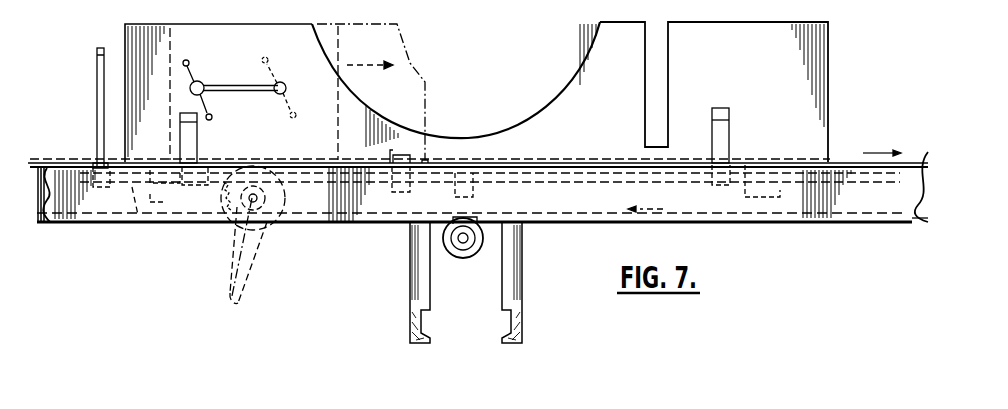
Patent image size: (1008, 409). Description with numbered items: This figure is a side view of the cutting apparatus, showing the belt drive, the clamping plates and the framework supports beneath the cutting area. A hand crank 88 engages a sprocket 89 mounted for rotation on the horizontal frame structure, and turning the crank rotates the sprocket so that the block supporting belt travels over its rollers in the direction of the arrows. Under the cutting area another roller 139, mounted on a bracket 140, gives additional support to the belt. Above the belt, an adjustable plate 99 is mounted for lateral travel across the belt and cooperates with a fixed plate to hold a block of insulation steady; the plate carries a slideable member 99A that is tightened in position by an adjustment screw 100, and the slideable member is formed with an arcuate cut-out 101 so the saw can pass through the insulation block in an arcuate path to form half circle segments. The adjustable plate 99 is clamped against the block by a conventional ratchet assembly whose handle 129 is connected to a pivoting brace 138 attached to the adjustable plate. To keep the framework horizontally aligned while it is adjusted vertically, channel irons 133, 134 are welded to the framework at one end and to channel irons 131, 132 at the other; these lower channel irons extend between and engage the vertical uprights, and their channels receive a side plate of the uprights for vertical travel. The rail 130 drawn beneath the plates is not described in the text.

The hand crank 88 is at (250, 250).
The sprocket 89 is at (282, 191).
The adjustable plate 99 is at (614, 130).
The slideable member 99A is at (409, 99).
The adjustment screw 100 is at (199, 80).
The arcuate cut-out 101 is at (491, 77).
The handle 129 is at (97, 52).
The rail channel 130 is at (141, 227).
The channel iron 131 is at (410, 325).
The channel iron 132 is at (523, 330).
The channel iron 133 is at (410, 285).
The channel iron 134 is at (510, 287).
The pivoting brace 138 is at (191, 143).
The roller 139 is at (452, 258).
The bracket 140 is at (480, 228).